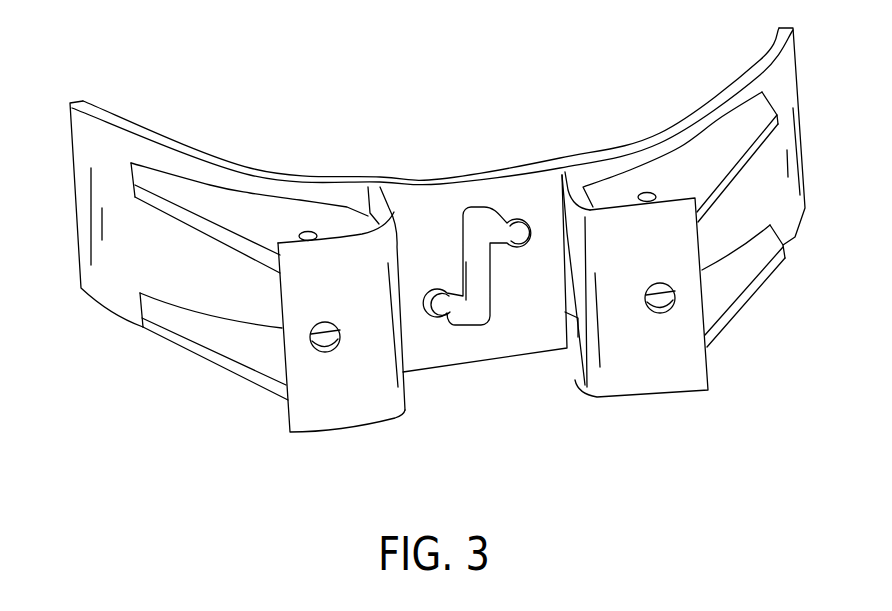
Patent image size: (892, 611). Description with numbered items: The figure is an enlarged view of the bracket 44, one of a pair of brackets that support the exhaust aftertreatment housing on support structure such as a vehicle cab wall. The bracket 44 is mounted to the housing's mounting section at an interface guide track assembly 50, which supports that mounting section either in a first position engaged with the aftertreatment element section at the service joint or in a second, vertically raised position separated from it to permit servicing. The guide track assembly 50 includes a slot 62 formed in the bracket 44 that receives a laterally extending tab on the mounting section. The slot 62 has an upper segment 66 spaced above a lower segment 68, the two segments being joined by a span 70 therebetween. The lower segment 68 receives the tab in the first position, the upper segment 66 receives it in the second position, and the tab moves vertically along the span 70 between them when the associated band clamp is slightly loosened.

The bracket 44 is at (412, 177).
The interface guide track assembly 50 is at (460, 263).
The slot 62 is at (488, 314).
The upper segment 66 is at (494, 224).
The lower segment 68 is at (468, 316).
The span 70 is at (480, 272).